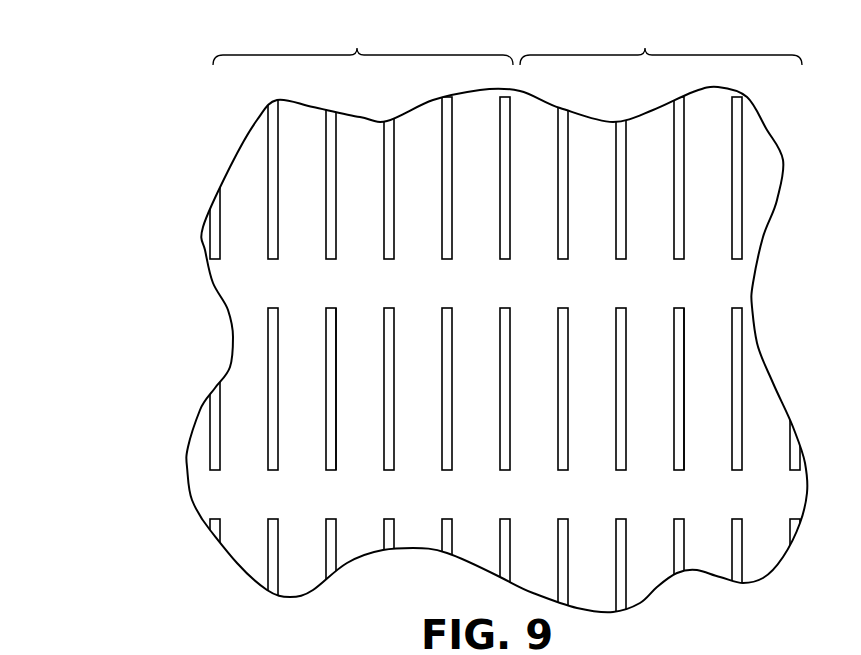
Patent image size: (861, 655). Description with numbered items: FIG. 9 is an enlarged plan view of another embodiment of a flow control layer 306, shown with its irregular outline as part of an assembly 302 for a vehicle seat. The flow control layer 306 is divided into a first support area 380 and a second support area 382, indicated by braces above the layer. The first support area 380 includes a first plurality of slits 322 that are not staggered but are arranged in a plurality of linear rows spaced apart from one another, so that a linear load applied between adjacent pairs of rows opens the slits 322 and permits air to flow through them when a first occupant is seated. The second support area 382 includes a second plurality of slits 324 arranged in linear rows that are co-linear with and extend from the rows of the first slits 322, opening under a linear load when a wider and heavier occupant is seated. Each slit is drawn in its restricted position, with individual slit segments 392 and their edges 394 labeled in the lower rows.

The touch sensor 302 is at (97, 166).
The flow control layer 306 is at (232, 172).
The first plurality of slits 322 is at (385, 128).
The second plurality of slits 324 is at (735, 135).
The first support area 380 is at (363, 43).
The second support area 382 is at (661, 43).
The electrode segment 392 is at (330, 363).
The electrode edge 394 is at (333, 383).